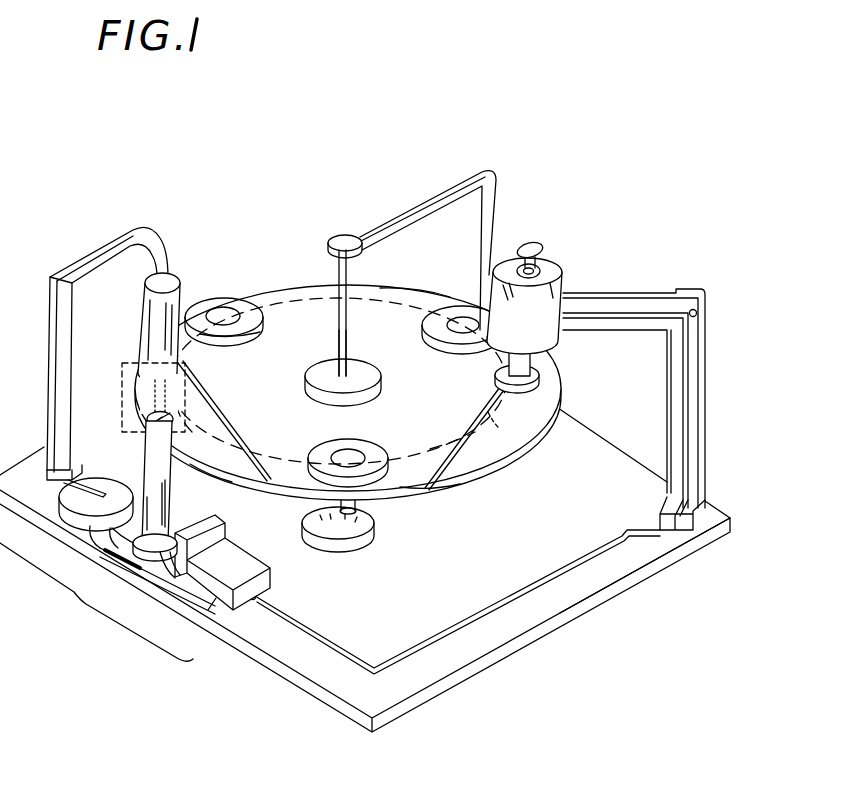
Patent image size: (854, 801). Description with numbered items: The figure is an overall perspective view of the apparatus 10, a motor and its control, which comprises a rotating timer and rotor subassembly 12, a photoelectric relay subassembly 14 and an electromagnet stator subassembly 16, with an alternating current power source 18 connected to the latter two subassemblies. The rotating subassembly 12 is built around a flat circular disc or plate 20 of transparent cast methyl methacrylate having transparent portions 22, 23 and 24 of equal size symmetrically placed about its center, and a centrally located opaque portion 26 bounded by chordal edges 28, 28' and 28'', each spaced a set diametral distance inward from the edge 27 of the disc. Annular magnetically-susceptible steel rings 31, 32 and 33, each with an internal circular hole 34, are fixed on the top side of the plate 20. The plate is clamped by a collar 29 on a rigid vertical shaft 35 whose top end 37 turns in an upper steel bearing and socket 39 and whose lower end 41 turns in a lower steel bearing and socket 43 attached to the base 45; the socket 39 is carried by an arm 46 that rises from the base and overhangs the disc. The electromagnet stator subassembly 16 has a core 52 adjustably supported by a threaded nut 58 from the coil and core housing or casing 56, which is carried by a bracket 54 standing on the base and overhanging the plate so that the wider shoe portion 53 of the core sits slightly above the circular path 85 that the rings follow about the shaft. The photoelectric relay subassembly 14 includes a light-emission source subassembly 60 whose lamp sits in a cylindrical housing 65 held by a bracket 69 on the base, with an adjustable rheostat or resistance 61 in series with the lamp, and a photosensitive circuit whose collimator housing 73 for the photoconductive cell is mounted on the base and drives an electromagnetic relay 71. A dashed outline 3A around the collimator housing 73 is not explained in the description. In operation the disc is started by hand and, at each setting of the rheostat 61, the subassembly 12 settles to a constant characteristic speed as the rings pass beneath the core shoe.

The apparatus 10 is at (566, 641).
The rotating timer and rotor subassembly 12 is at (277, 266).
The photoelectric relay subassembly 14 is at (96, 602).
The electromagnet stator subassembly 16 is at (552, 256).
The alternating current power source 18 is at (136, 562).
The flat circular disc or plate 20 is at (533, 461).
The transparent portion 22 is at (496, 450).
The transparent portion 23 is at (212, 462).
The transparent portion 24 is at (416, 296).
The opaque portion 26 is at (262, 416).
The edge of the disc 27 is at (428, 491).
The chordal edge 28 is at (338, 381).
The chordal edge 28' is at (208, 406).
The chordal edge 28'' is at (441, 445).
The collar 29 is at (358, 365).
The steel ring 31 is at (446, 346).
The steel ring 32 is at (366, 442).
The steel ring 33 is at (254, 336).
The internal circular hole 34 is at (223, 314).
The vertical shaft 35 is at (350, 362).
The top end of shaft 37 is at (348, 276).
The upper steel bearing and socket 39 is at (347, 236).
The lower end of shaft 41 is at (360, 513).
The lower steel bearing and socket 43 is at (340, 534).
The base 45 is at (622, 580).
The arm 46 is at (432, 190).
The core 52 is at (534, 362).
The shoe portion 53 is at (543, 379).
The bracket 54 is at (607, 290).
The coil and core housing or casing 56 is at (559, 339).
The threaded nut 58 is at (525, 244).
The light-emission source subassembly 60 is at (97, 262).
The adjustable rheostat or resistance 61 is at (72, 520).
The cylindrical housing 65 is at (183, 300).
The bracket 69 is at (70, 380).
The electromagnetic relay 71 is at (250, 548).
The collimator housing 73 is at (143, 455).
The path 85 is at (496, 404).
The detail view indicator 3A is at (118, 393).